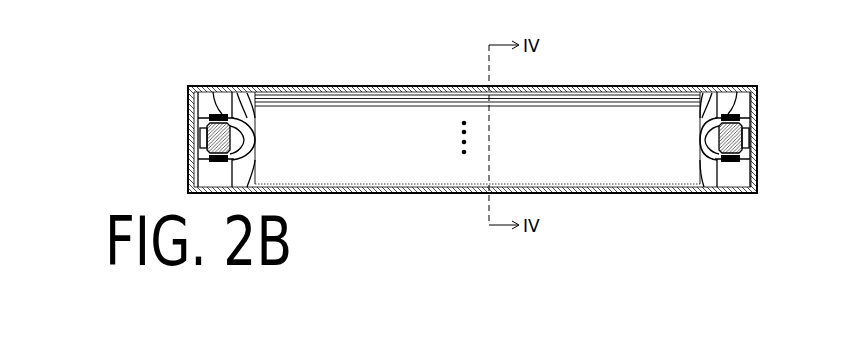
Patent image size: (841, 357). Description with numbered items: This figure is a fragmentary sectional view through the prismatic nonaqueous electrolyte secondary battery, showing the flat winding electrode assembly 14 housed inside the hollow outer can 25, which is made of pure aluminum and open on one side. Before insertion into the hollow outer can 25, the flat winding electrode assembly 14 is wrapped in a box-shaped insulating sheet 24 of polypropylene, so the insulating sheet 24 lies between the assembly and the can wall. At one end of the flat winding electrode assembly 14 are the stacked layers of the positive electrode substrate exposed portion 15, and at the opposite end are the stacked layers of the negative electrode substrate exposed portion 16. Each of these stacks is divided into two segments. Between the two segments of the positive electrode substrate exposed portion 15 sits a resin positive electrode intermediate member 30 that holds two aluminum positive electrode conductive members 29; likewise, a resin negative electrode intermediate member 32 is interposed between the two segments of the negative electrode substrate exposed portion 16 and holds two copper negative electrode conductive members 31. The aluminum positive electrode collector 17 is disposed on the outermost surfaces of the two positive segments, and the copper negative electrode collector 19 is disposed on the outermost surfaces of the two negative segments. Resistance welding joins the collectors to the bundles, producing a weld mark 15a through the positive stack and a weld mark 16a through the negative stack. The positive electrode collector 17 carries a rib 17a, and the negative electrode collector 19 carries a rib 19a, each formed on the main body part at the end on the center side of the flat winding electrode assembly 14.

The flat winding electrode assembly 14 is at (597, 115).
The positive electrode substrate exposed portion 15 is at (706, 120).
The weld mark 15a is at (738, 113).
The negative electrode substrate exposed portion 16 is at (258, 95).
The weld mark 16a is at (218, 113).
The positive electrode collector 17 is at (752, 110).
The rib 17a is at (718, 114).
The negative electrode collector 19 is at (200, 112).
The rib 19a is at (234, 110).
The insulating sheet 24 is at (413, 92).
The hollow outer can 25 is at (362, 92).
The positive electrode conductive members 29 is at (735, 132).
The positive electrode intermediate member 30 is at (748, 138).
The negative electrode conductive members 31 is at (212, 138).
The negative electrode intermediate member 32 is at (203, 138).